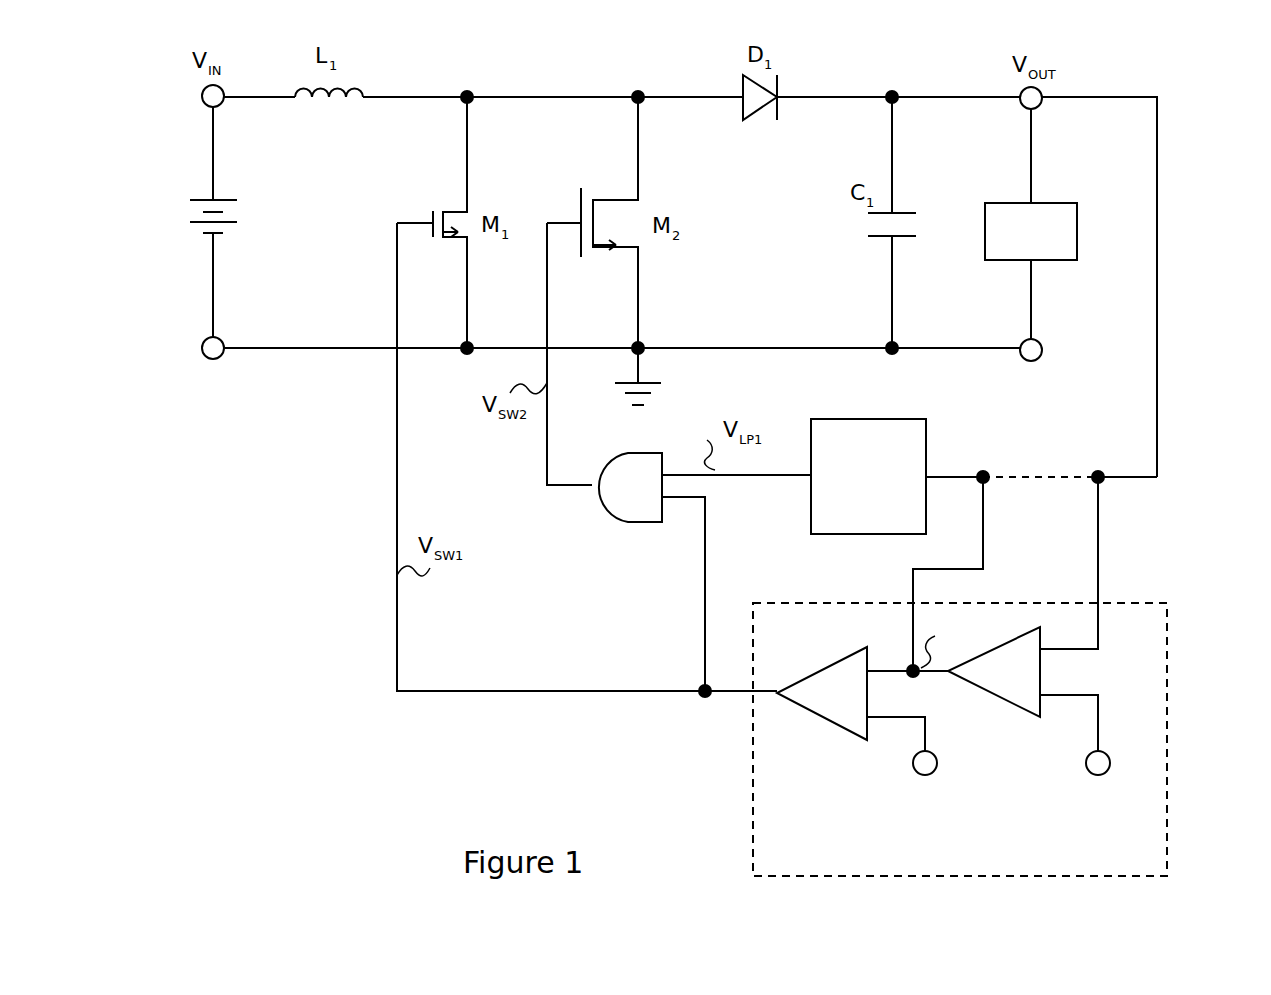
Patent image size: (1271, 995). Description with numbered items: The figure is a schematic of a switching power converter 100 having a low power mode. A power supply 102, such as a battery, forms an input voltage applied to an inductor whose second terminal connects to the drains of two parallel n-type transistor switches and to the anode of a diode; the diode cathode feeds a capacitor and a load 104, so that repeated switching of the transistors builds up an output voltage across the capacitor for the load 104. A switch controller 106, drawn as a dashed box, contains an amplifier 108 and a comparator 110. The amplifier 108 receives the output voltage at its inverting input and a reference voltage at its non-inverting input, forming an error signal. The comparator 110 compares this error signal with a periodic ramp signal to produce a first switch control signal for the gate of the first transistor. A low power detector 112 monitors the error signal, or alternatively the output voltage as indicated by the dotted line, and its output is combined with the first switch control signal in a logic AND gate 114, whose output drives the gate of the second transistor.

The switching power converter 100 is at (281, 509).
The power supply 102 is at (210, 197).
The load 104 is at (1053, 203).
The switch controller 106 is at (1167, 643).
The amplifier 108 is at (1021, 713).
The comparator 110 is at (817, 718).
The low power detector 112 is at (926, 440).
The logic AND gate 114 is at (606, 508).